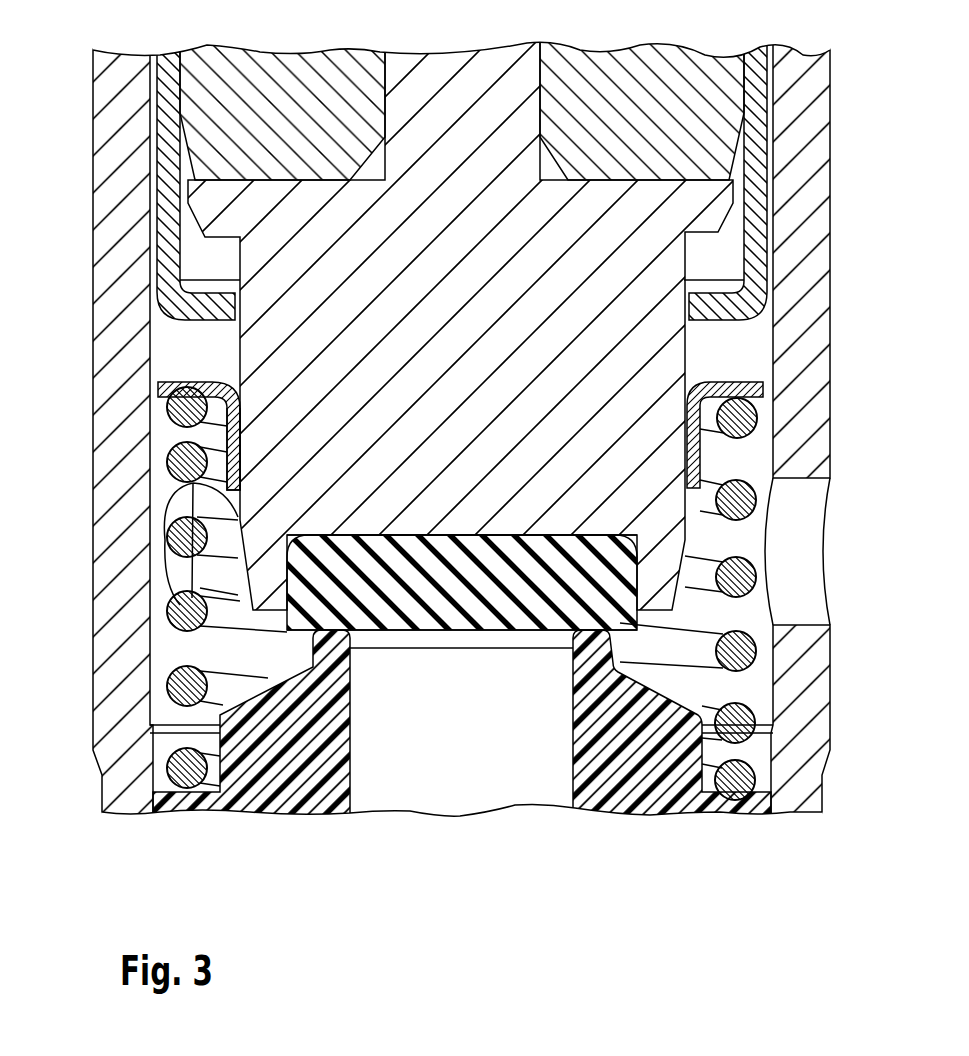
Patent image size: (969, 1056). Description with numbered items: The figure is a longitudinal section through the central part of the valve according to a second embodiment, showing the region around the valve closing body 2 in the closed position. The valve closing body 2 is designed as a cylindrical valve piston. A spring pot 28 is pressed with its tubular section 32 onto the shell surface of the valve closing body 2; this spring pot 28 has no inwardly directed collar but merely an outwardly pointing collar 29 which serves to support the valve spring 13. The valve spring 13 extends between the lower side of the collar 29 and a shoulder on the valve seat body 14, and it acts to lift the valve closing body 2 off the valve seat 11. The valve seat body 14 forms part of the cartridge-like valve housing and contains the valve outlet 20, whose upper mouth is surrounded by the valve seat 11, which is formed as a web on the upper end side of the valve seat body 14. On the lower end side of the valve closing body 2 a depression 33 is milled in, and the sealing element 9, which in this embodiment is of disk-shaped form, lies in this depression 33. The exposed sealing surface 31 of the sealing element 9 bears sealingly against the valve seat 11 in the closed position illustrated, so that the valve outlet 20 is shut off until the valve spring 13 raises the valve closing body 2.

The valve closing body 2 is at (587, 350).
The sealing element 9 is at (389, 593).
The valve seat 11 is at (570, 607).
The valve spring 13 is at (740, 577).
The valve seat body 14 is at (643, 773).
The valve outlet 20 is at (353, 743).
The spring pot 28 is at (702, 445).
The collar 29 is at (172, 382).
The sealing surface 31 is at (490, 632).
The tubular section 32 is at (227, 428).
The depression 33 is at (447, 537).